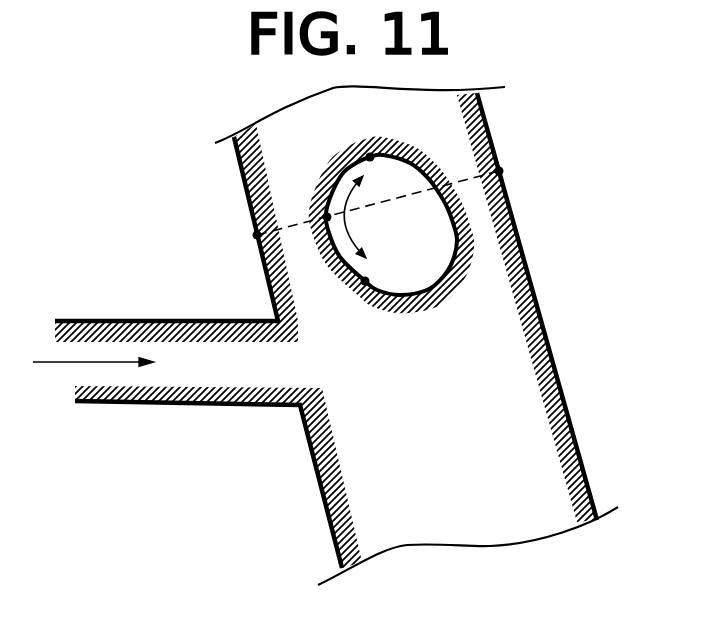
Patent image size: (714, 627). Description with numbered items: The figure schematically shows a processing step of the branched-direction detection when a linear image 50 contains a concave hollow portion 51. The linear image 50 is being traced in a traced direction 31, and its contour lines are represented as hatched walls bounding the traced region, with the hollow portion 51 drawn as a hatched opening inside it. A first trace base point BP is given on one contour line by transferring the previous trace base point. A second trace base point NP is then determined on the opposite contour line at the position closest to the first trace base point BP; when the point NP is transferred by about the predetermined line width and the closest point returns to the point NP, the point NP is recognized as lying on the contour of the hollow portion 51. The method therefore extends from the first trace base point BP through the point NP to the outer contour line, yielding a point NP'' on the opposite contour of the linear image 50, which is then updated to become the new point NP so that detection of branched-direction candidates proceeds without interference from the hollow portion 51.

The linear image 50 is at (80, 321).
The traced direction 31 is at (52, 364).
The hollow portion 51 is at (438, 236).
The first trace base point BP is at (212, 236).
The second trace base point NP is at (374, 232).
The opposite contour point NP'' is at (534, 157).